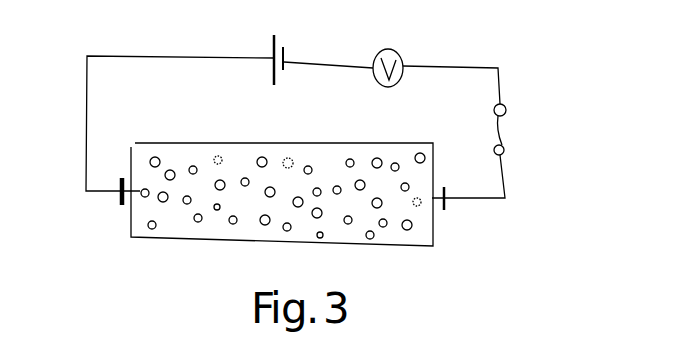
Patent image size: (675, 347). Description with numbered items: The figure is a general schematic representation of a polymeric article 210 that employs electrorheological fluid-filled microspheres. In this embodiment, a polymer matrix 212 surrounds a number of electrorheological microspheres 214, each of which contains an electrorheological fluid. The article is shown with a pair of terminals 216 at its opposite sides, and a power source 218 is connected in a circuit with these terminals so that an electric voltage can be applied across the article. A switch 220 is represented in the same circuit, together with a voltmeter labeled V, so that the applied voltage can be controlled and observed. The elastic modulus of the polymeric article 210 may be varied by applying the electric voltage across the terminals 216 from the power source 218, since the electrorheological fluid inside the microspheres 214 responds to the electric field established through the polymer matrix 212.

The polymeric article 210 is at (101, 18).
The polymer matrix 212 is at (316, 136).
The electrorheological microspheres 214 is at (396, 165).
The terminals 216 is at (118, 202).
The power source 218 is at (295, 40).
The switch 220 is at (509, 124).